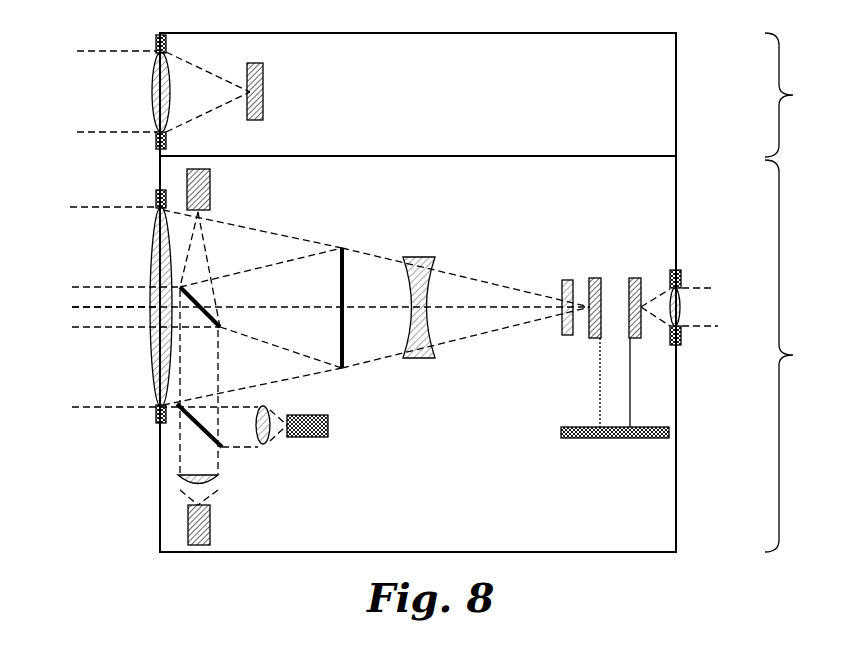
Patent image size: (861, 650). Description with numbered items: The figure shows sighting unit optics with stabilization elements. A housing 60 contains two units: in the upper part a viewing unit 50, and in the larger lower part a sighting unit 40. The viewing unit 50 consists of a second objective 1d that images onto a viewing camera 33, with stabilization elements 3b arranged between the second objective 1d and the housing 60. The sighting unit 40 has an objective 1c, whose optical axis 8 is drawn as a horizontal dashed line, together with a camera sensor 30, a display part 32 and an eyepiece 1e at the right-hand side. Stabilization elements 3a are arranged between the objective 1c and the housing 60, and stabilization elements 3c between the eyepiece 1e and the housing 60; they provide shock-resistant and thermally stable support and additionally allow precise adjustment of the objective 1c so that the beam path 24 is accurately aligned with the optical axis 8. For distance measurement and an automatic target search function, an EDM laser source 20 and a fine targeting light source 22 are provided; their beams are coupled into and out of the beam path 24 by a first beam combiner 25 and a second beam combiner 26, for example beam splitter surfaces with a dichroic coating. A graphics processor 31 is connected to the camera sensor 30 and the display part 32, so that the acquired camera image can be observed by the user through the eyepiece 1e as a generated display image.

The stabilization element 3b is at (94, 81).
The second objective 1d is at (96, 91).
The viewing camera 33 is at (281, 91).
The stabilization element 3a is at (94, 296).
The objective 1c is at (97, 307).
The optical axis 8 is at (100, 307).
The housing 60 is at (91, 501).
The first beam combiner 25 is at (223, 269).
The beam path 24 is at (297, 326).
The second beam combiner 26 is at (244, 447).
The fine targeting light source 22 is at (236, 510).
The EDM laser source 20 is at (319, 429).
The camera sensor 30 is at (569, 307).
The display part 32 is at (652, 307).
The graphics processor 31 is at (603, 459).
The stabilization element 3c is at (700, 300).
The eyepiece 1e is at (677, 307).
The viewing unit 50 is at (795, 95).
The sighting unit 40 is at (795, 356).